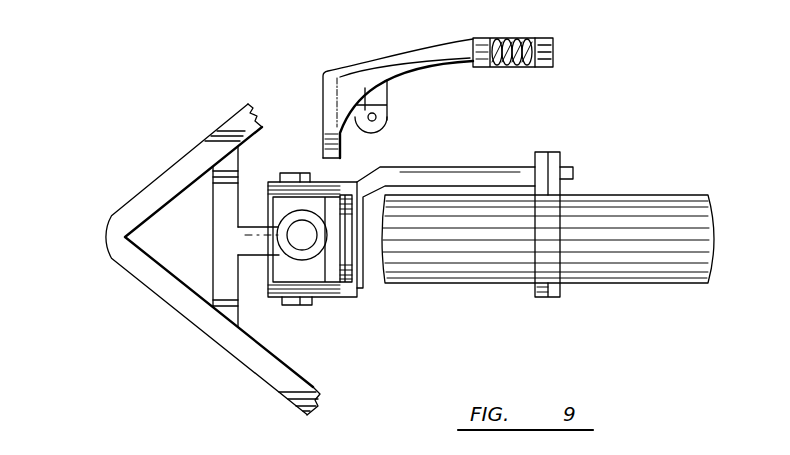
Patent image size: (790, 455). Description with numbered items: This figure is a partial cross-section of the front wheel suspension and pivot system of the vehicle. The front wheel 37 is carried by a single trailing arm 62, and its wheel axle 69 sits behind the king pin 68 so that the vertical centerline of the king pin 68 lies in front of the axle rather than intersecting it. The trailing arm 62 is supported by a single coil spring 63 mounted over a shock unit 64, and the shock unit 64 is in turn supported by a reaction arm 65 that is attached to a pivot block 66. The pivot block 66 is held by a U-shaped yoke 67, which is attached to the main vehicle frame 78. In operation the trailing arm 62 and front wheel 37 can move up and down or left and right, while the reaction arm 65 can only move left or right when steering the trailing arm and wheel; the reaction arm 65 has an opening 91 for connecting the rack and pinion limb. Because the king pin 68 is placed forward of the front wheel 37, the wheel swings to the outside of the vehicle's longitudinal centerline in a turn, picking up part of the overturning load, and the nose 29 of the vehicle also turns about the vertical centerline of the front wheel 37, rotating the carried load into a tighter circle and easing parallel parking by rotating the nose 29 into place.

The nose 29 is at (98, 232).
The main vehicle frame 78 is at (212, 253).
The U-shaped yoke 67 is at (250, 226).
The king pin 68 is at (300, 238).
The pivot block 66 is at (303, 247).
The trailing arm 62 is at (452, 165).
The front wheel 37 is at (502, 280).
The wheel axle 69 is at (561, 293).
The reaction arm 65 is at (380, 60).
The opening 91 is at (378, 118).
The coil spring 63 is at (520, 37).
The shock unit 64 is at (553, 50).